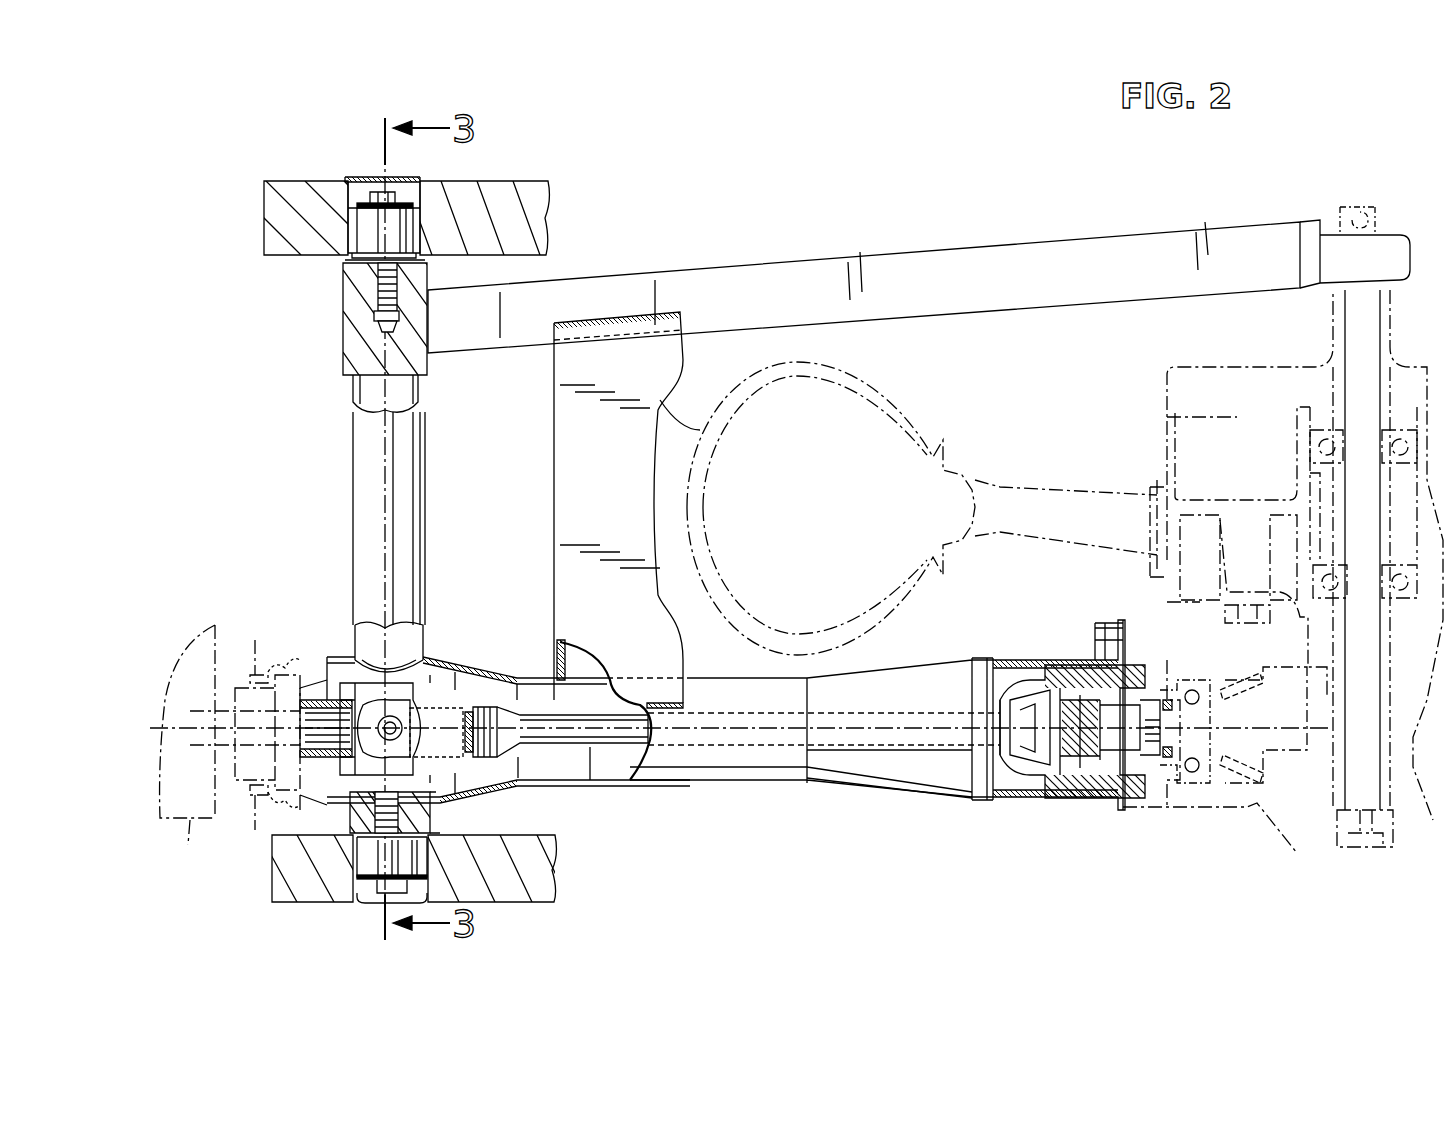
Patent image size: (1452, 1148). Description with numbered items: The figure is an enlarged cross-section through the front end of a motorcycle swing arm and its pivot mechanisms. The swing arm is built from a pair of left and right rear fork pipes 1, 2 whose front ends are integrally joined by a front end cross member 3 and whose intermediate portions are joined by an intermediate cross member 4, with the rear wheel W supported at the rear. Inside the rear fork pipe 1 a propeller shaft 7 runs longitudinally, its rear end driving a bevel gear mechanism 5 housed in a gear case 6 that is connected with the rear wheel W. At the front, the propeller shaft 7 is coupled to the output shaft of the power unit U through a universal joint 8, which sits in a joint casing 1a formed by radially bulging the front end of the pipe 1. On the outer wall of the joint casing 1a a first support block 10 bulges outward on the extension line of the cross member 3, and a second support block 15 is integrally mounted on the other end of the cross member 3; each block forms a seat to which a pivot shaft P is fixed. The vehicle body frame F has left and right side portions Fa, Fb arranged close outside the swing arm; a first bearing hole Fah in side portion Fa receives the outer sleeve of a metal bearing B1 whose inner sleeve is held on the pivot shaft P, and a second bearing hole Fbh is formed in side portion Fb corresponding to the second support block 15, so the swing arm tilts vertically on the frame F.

The rear fork pipe 1 is at (765, 790).
The joint casing 1a is at (450, 658).
The rear fork pipe 2 is at (762, 272).
The front end cross member 3 is at (357, 512).
The intermediate cross member 4 is at (570, 478).
The bevel gear mechanism 5 is at (1252, 790).
The gear case 6 is at (1190, 810).
The propeller shaft 7 is at (592, 782).
The universal joint 8 is at (325, 685).
The first support block 10 is at (475, 822).
The second support block 15 is at (345, 355).
The metal bearing B1 is at (357, 232).
The pivot shaft P is at (380, 205).
The vehicle body frame F is at (278, 268).
The lateral side portion of the vehicle body frame Fa is at (528, 902).
The lateral side portion of the vehicle body frame Fb is at (530, 175).
The first bearing hole Fah is at (350, 818).
The second bearing hole Fbh is at (402, 195).
The power unit U is at (230, 762).
The rear wheel W is at (920, 372).